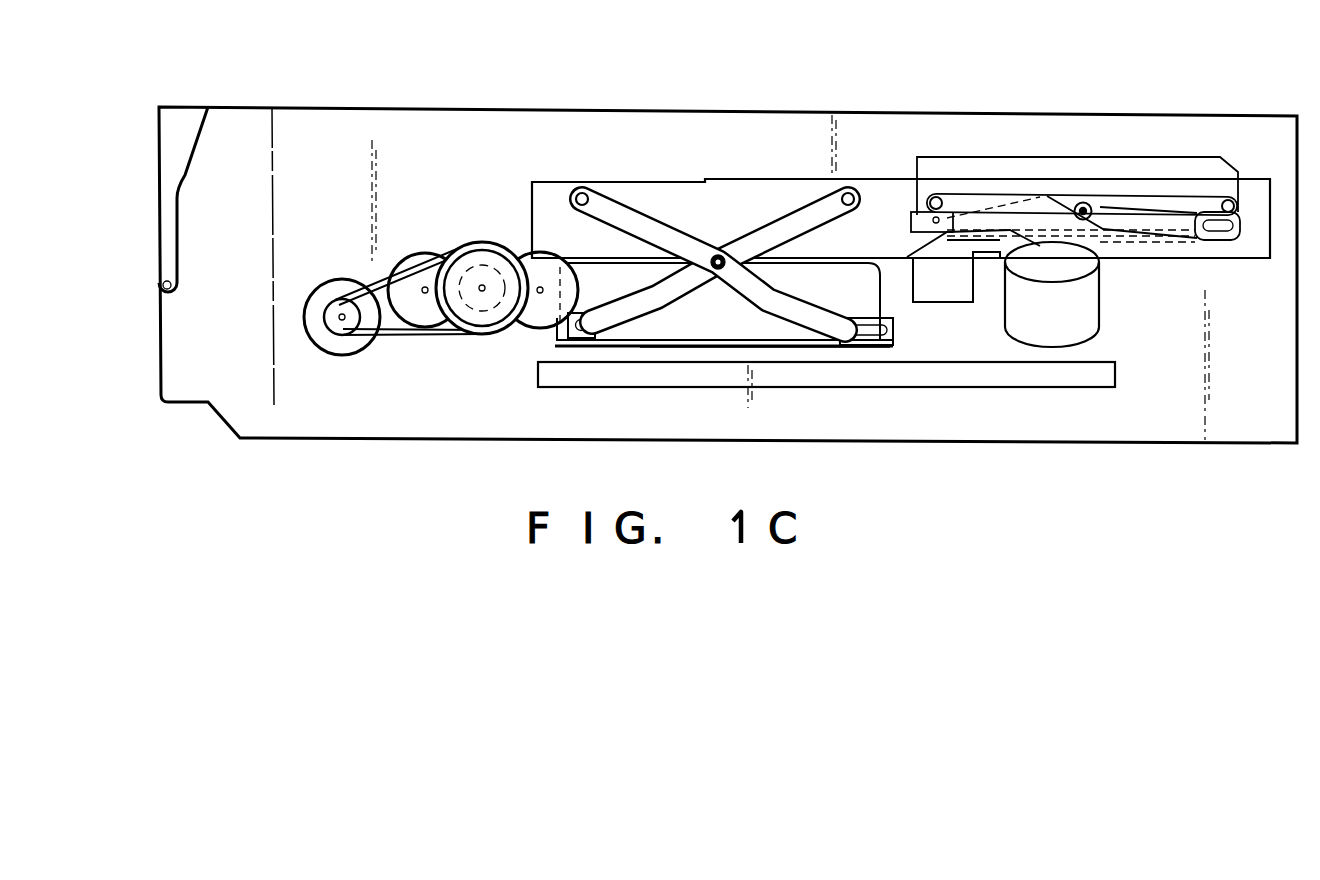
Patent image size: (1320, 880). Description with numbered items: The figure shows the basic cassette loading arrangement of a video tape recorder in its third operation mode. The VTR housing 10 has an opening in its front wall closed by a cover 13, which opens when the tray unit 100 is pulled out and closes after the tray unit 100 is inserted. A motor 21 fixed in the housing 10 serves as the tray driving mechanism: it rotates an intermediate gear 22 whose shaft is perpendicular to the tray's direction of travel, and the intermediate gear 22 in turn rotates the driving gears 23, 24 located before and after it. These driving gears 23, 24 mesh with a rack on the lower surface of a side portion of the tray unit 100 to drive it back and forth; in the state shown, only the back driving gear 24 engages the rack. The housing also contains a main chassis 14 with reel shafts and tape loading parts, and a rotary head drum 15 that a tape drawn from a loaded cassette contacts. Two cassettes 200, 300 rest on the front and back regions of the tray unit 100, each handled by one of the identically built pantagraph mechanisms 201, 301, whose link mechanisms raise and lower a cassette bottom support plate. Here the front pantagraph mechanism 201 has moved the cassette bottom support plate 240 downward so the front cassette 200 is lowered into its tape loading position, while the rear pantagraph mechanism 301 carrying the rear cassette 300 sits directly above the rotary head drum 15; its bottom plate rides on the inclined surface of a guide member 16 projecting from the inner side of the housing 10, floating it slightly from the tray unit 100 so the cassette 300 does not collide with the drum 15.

The VTR housing 10 is at (623, 107).
The cover 13 is at (158, 163).
The main chassis 14 is at (1110, 380).
The rotary head drum 15 is at (1095, 309).
The guide member 16 is at (920, 244).
The motor 21 is at (343, 340).
The intermediate gear 22 is at (477, 335).
The driving gear 23 is at (422, 312).
The driving gear 24 is at (533, 318).
The tray unit 100 is at (580, 178).
The cassette 200 is at (868, 299).
The pantagraph mechanism 201 is at (717, 280).
The cassette bottom support plate 240 is at (660, 345).
The cassette 300 is at (1087, 157).
The pantagraph mechanism 301 is at (1145, 188).